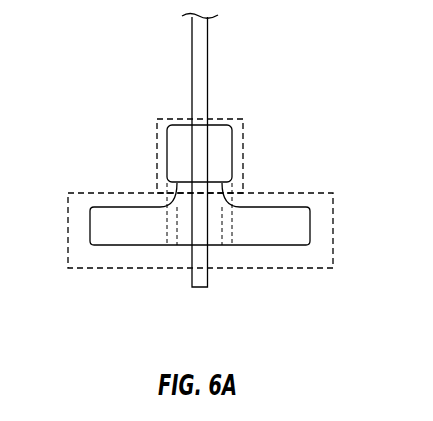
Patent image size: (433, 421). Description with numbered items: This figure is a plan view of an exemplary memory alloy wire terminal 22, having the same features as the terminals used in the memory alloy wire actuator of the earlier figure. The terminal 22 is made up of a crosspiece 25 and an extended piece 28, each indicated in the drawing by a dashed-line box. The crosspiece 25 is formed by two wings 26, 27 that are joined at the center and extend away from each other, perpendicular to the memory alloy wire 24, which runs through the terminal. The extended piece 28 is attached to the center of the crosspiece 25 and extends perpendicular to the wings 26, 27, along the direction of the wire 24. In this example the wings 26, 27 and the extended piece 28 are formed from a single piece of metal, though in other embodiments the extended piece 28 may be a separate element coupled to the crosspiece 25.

The memory alloy wire terminal 22 is at (117, 115).
The memory alloy wire 24 is at (192, 277).
The crosspiece 25 is at (302, 192).
The wing 26 is at (290, 237).
The wing 27 is at (115, 237).
The extended piece 28 is at (223, 118).